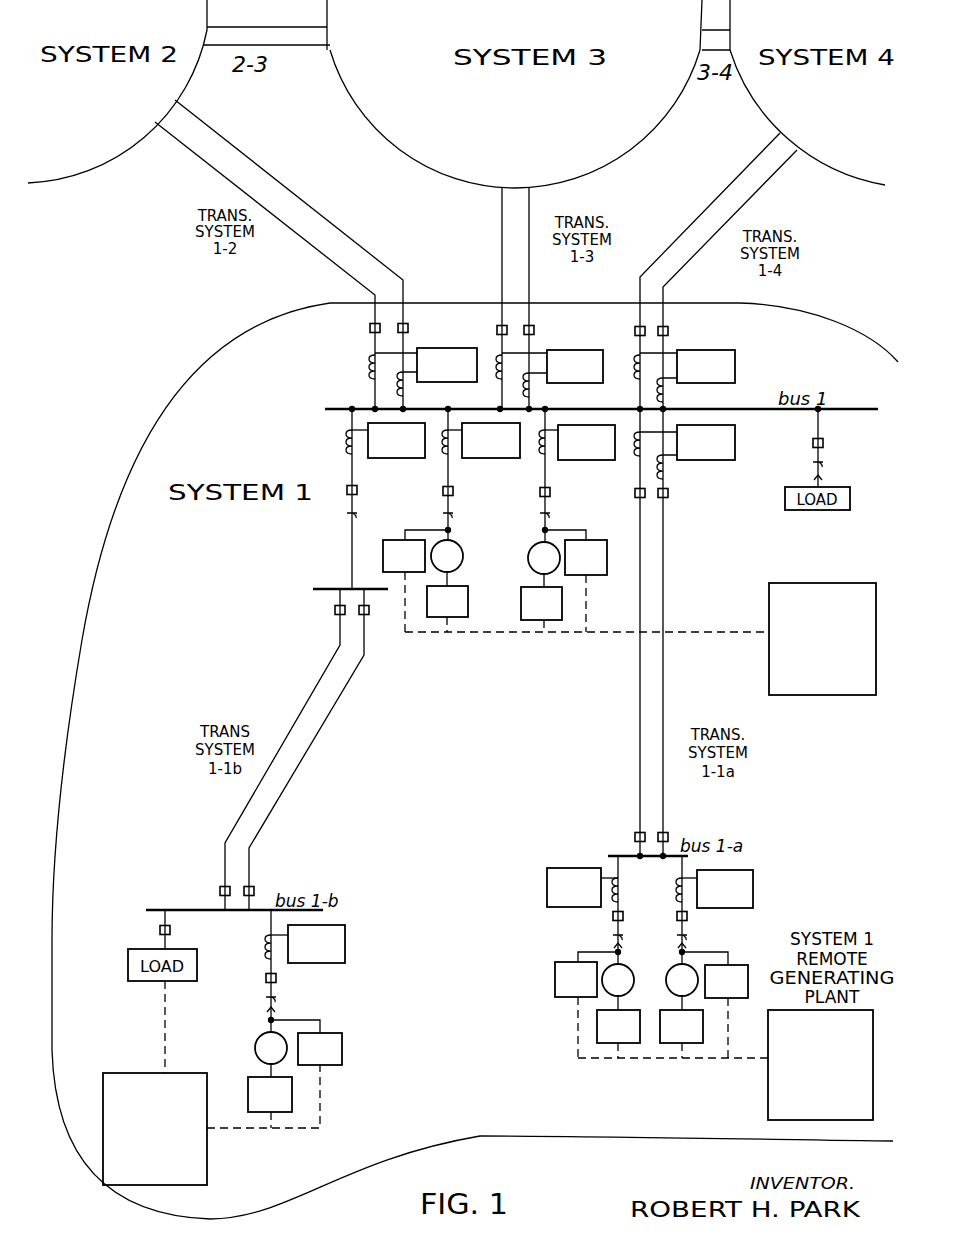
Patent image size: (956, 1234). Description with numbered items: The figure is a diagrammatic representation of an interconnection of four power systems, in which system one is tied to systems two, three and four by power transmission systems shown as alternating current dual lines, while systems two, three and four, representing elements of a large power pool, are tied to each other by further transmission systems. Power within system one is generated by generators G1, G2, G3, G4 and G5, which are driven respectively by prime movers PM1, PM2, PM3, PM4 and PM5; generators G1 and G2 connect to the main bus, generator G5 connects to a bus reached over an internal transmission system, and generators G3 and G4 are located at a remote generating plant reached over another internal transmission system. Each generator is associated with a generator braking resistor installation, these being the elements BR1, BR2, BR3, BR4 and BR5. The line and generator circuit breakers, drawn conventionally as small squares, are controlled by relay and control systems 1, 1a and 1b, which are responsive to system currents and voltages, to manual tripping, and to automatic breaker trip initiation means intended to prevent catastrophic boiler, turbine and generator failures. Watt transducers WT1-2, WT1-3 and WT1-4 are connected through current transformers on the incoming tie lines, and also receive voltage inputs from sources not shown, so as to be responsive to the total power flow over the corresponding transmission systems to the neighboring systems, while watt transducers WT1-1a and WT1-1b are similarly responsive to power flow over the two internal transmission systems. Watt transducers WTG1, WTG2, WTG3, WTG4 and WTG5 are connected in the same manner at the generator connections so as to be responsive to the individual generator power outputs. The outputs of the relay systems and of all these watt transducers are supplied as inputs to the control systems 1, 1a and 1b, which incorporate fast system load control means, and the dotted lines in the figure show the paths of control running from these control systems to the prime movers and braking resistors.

The watt transducer WT1-2 is at (423, 372).
The watt transducer WT1-3 is at (549, 373).
The watt transducer WT1-4 is at (684, 376).
The watt transducer WT1-1a is at (684, 452).
The watt transducer WT1-1b is at (385, 440).
The watt transducer WTG1 is at (481, 440).
The watt transducer WTG2 is at (577, 442).
The watt transducer WTG3 is at (582, 887).
The watt transducer WTG4 is at (714, 889).
The watt transducer WTG5 is at (305, 944).
The generator G1 is at (447, 556).
The generator G2 is at (544, 558).
The generator G3 is at (618, 980).
The generator G4 is at (682, 980).
The generator G5 is at (271, 1048).
The generator braking resistor installation BR1 is at (404, 556).
The generator braking resistor installation BR2 is at (586, 557).
The generator braking resistor installation BR3 is at (576, 979).
The generator braking resistor installation BR4 is at (726, 981).
The generator braking resistor installation BR5 is at (320, 1049).
The prime mover PM1 is at (447, 601).
The prime mover PM2 is at (541, 603).
The prime mover PM3 is at (618, 1026).
The prime mover PM4 is at (681, 1026).
The prime mover PM5 is at (270, 1094).
The relay and control system 1 is at (822, 639).
The relay and control system 1a is at (820, 1065).
The relay and control system 1b is at (155, 1129).